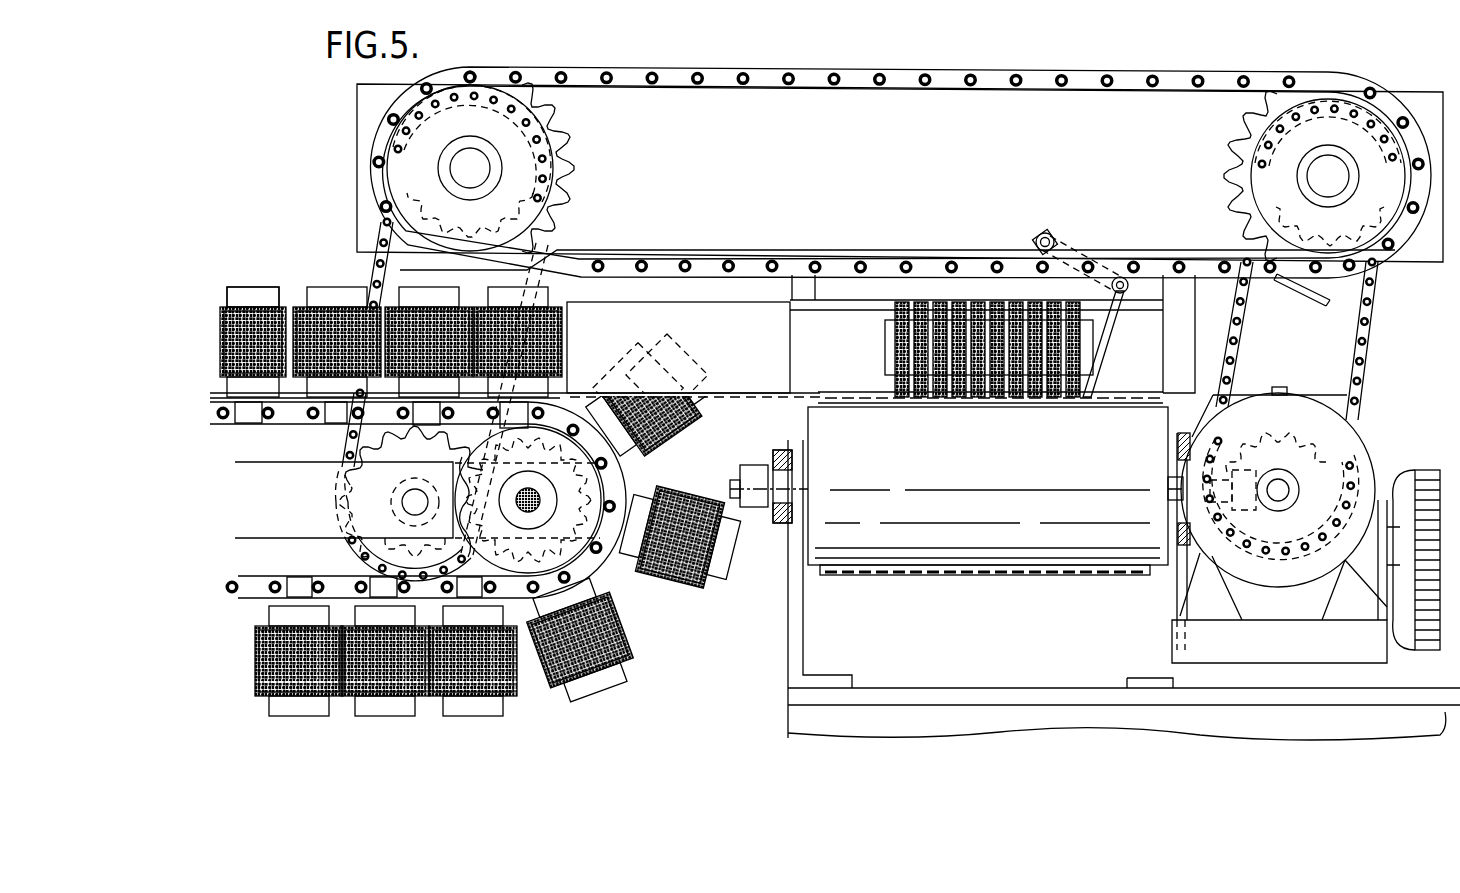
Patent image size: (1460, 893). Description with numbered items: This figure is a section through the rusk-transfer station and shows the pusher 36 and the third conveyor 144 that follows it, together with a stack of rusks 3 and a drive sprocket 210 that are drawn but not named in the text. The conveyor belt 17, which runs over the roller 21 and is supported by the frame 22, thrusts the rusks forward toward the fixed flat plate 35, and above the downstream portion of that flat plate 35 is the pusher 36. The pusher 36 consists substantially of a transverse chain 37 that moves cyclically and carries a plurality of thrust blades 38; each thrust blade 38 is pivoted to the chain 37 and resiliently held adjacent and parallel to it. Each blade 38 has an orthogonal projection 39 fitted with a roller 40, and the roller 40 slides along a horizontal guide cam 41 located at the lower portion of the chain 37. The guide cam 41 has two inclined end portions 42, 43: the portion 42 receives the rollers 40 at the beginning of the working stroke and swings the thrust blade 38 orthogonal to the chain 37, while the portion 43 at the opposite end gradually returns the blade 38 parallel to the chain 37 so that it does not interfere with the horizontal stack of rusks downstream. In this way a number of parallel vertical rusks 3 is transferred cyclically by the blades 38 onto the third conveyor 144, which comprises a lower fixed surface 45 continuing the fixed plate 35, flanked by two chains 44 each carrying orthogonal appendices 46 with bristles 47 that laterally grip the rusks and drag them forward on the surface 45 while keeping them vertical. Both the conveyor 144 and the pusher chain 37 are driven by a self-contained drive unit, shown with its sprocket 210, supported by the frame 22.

The stack of slices 3 is at (963, 297).
The conveyor belt 17 is at (913, 575).
The roller 21 is at (1013, 547).
The frame 22 is at (908, 687).
The flat plate 35 is at (1173, 387).
The pusher 36 is at (1160, 71).
The transverse chain 37 is at (1025, 79).
The thrust blade 38 is at (1113, 332).
The orthogonal projection 39 is at (1070, 243).
The roller 40 is at (1052, 236).
The horizontal guide cam 41 is at (710, 250).
The inclined end portion 42 is at (1308, 297).
The inclined end portion 43 is at (420, 268).
The chain 44 is at (610, 473).
The lower fixed surface 45 is at (713, 397).
The orthogonal appendix 46 is at (243, 283).
The bristles 47 is at (278, 320).
The third conveyor 144 is at (605, 568).
The drive wheel 210 is at (1367, 477).